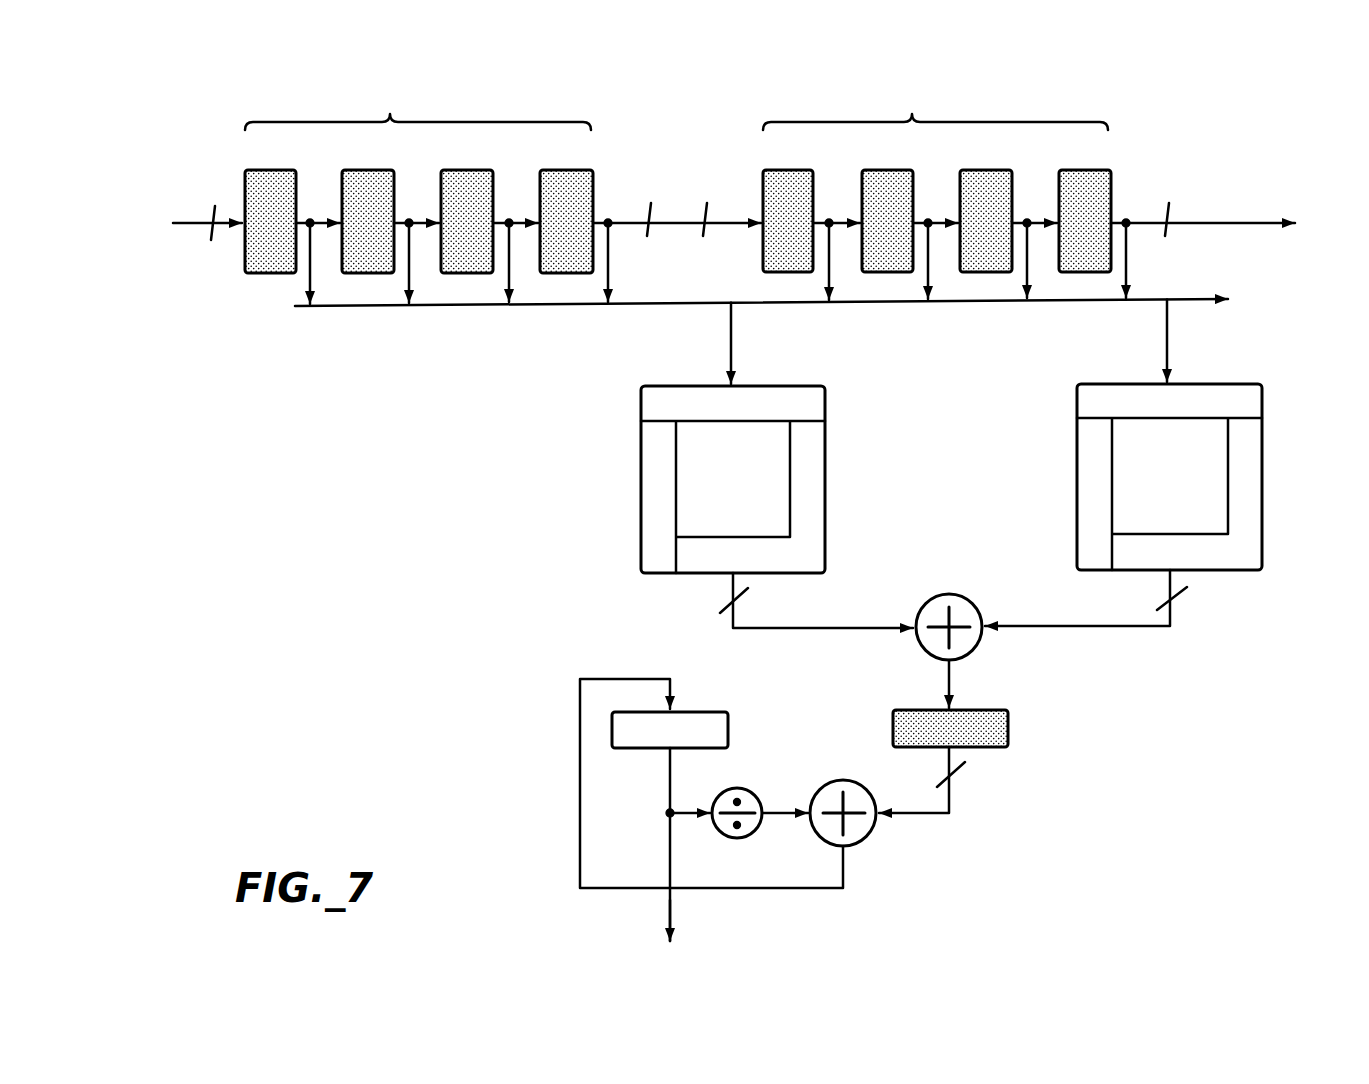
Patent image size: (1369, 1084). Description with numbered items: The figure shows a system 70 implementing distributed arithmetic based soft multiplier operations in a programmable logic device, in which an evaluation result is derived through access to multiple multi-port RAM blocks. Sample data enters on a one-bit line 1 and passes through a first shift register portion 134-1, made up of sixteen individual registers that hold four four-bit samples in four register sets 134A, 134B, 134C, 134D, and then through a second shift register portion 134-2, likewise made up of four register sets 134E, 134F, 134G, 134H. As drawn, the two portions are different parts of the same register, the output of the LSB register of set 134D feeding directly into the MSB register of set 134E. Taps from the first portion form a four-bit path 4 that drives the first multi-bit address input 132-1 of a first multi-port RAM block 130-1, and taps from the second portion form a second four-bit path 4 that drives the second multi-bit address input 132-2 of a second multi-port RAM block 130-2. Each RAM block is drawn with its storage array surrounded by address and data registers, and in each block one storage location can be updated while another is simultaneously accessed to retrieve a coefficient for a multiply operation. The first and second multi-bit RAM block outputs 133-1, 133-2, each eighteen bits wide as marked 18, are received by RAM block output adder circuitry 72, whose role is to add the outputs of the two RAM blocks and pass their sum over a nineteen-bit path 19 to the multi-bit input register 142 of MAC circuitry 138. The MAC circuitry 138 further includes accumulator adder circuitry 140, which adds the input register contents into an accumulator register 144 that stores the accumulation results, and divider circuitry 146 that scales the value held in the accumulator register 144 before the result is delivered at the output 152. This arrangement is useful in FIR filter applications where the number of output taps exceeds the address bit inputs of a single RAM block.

The system 70 is at (159, 169).
The one-bit bus width 1 is at (695, 212).
The four-bit bus width 4 is at (957, 322).
The eighteen-bit bus width 18 is at (962, 604).
The nineteen-bit bus width 19 is at (959, 778).
The first shift register portion 134-1 is at (418, 110).
The second shift register portion 134-2 is at (935, 108).
The register set 134A is at (266, 170).
The register set 134B is at (364, 170).
The register set 134C is at (463, 170).
The register set 134D is at (562, 170).
The register set 134E is at (784, 170).
The register set 134F is at (883, 170).
The register set 134G is at (981, 170).
The register set 134H is at (1079, 170).
The first multi-bit address input 132-1 is at (468, 306).
The second multi-bit address input 132-2 is at (989, 301).
The first multi-port RAM block 130-1 is at (641, 459).
The second multi-port RAM block 130-2 is at (1077, 458).
The first multi-bit RAM block output 133-1 is at (800, 630).
The second multi-bit RAM block output 133-2 is at (1097, 628).
The RAM block output adder circuitry 72 is at (970, 602).
The multi-bit input register 142 is at (1009, 718).
The accumulator register 144 is at (731, 722).
The divider circuitry 146 is at (740, 789).
The accumulator adder circuitry 140 is at (867, 791).
The output 152 is at (674, 922).
The MAC circuitry 138 is at (1009, 861).